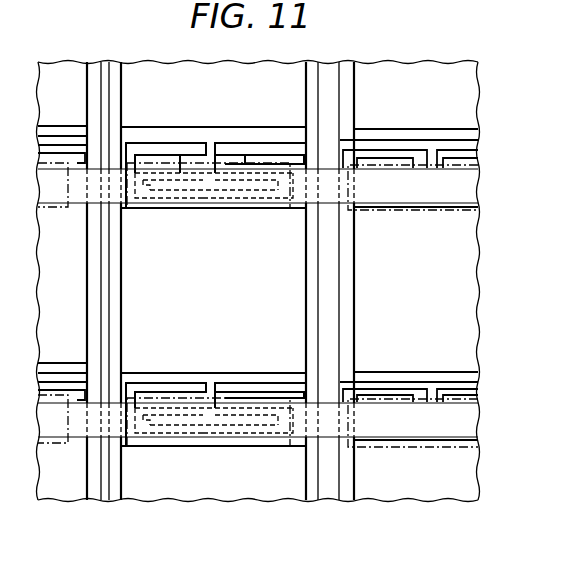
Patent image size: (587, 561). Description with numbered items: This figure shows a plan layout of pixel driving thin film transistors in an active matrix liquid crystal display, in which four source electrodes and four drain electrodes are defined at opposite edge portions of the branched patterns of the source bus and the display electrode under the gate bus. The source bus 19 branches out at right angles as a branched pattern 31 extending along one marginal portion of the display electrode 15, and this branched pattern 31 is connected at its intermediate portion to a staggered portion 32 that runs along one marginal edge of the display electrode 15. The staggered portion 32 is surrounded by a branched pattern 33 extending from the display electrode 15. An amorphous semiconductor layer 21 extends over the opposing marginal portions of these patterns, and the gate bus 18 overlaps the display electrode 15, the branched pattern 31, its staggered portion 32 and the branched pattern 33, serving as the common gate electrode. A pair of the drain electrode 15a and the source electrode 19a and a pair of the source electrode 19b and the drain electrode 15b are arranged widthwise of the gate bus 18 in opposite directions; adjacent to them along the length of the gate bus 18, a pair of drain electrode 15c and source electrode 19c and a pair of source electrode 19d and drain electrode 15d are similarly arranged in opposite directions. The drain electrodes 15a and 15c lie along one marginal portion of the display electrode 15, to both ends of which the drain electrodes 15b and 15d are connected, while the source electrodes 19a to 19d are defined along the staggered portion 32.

The display electrode 15 is at (298, 304).
The drain electrode 15a is at (182, 200).
The drain electrode 15b is at (192, 155).
The drain electrode 15c is at (262, 200).
The drain electrode 15d is at (280, 165).
The gate bus 18 is at (78, 209).
The source bus 19 is at (110, 98).
The source electrode 19a is at (165, 204).
The source electrode 19b is at (158, 163).
The source electrode 19c is at (235, 205).
The source electrode 19d is at (248, 170).
The amorphous semiconductor layer 21 is at (293, 208).
The branched pattern 31 is at (215, 160).
The staggered portion 32 is at (205, 198).
The branched pattern 33 is at (180, 167).